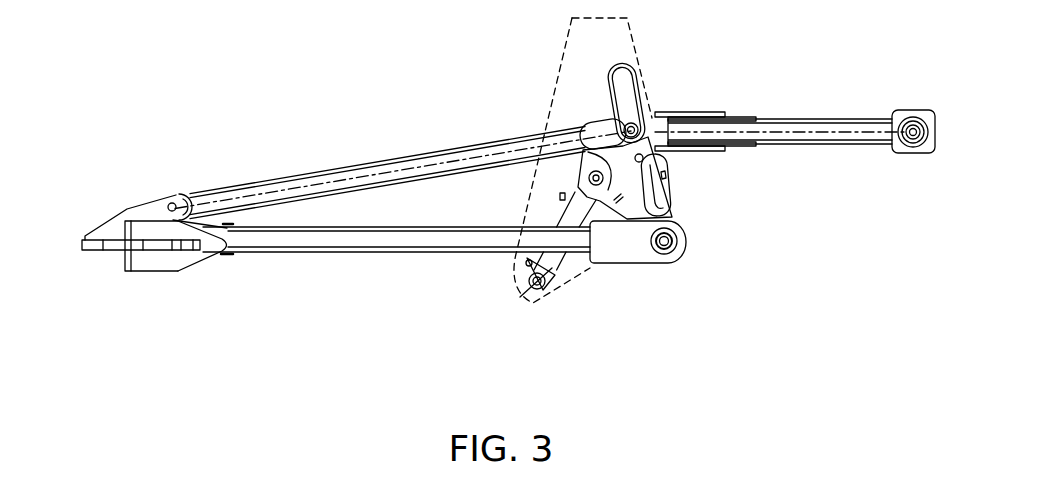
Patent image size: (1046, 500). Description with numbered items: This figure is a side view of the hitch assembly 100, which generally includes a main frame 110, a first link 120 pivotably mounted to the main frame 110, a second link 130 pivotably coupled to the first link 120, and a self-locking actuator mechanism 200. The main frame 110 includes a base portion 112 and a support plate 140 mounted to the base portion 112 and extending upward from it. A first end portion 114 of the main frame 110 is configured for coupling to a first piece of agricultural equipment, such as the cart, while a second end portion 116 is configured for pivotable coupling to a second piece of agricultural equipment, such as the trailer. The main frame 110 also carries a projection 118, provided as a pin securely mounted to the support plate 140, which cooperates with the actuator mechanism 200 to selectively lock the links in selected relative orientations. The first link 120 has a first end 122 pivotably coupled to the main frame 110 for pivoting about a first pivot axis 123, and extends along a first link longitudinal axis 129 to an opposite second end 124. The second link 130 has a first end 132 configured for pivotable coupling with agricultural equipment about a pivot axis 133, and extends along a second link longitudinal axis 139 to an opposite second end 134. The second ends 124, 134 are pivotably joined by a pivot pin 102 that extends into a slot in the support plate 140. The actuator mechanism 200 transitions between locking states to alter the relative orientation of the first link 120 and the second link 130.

The hitch assembly 100 is at (357, 60).
The pivot pin 102 is at (636, 118).
The main frame 110 is at (208, 304).
The base portion 112 is at (345, 256).
The first end portion 114 is at (95, 195).
The second end portion 116 is at (702, 244).
The projection 118 is at (665, 166).
The first link 120 is at (366, 164).
The first end 122 is at (184, 197).
The first pivot axis 123 is at (172, 203).
The second end 124 is at (579, 116).
The first link longitudinal axis 129 is at (444, 163).
The second link 130 is at (811, 119).
The first end 132 is at (912, 92).
The pivot axis 133 is at (908, 143).
The second end 134 is at (692, 96).
The second link longitudinal axis 139 is at (822, 134).
The support plate 140 is at (568, 33).
The self-locking actuator mechanism 200 is at (704, 195).